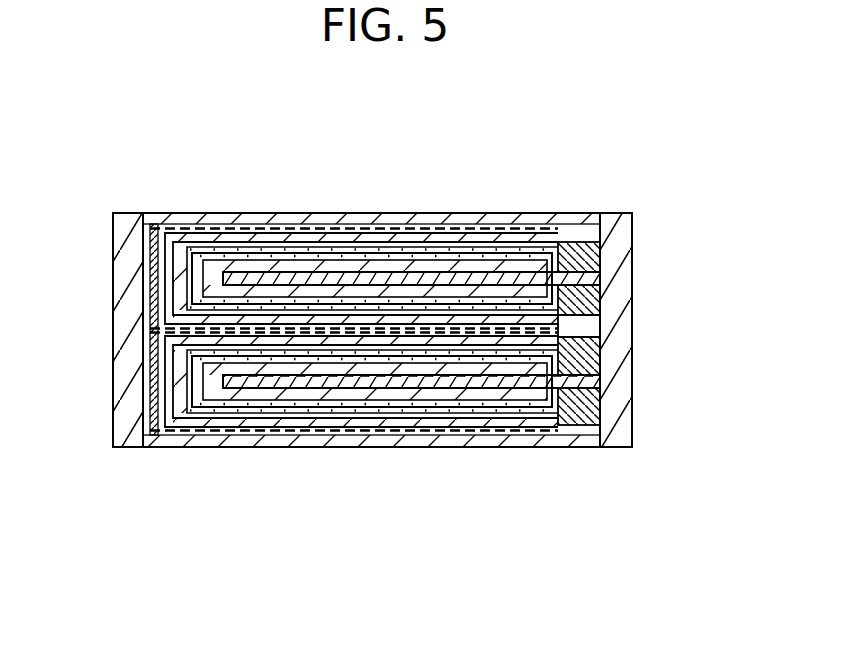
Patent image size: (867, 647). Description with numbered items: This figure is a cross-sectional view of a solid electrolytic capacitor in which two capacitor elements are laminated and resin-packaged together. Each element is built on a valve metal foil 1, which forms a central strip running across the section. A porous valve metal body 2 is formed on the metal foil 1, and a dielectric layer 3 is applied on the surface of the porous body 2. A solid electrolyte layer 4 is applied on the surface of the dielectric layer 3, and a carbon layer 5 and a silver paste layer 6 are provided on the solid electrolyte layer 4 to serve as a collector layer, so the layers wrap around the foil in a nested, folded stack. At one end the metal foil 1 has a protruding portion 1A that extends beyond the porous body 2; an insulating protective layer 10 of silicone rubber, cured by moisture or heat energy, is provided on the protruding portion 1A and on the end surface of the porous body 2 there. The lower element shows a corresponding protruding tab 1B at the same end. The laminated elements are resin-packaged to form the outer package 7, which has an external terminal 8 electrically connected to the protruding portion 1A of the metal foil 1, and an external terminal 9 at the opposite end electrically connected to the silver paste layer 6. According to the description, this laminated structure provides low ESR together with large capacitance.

The valve metal foil 1 is at (232, 275).
The protruding portion 1A is at (583, 280).
The negative electrode current collector tab 1B is at (583, 382).
The porous valve metal body 2 is at (410, 262).
The dielectric layer 3 is at (465, 251).
The solid electrolyte layer 4 is at (556, 242).
The carbon layer 5 is at (520, 232).
The silver paste layer 6 is at (286, 226).
The outer package 7 is at (362, 221).
The external terminal 8 is at (620, 226).
The external terminal 9 is at (122, 278).
The insulating protective layer 10 is at (577, 317).